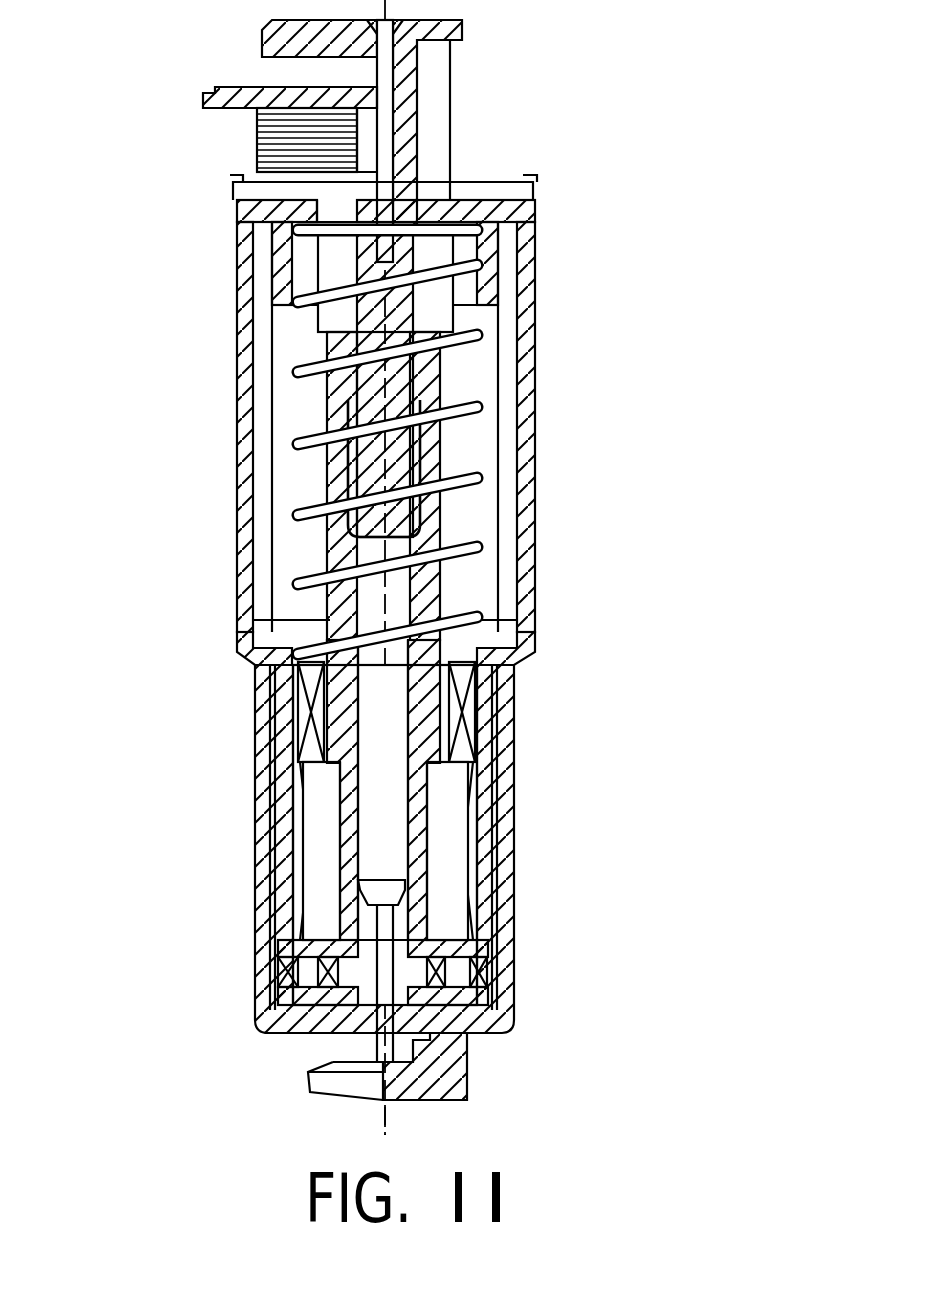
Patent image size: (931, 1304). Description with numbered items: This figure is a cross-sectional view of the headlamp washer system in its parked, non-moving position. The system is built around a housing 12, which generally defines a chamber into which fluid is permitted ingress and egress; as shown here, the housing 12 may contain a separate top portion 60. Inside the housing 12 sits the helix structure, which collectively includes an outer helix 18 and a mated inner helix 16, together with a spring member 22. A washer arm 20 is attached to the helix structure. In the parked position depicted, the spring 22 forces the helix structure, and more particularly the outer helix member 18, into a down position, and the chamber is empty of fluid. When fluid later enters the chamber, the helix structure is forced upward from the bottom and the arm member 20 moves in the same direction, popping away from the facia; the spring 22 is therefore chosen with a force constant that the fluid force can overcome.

The housing 12 is at (242, 342).
The inner helix 16 is at (447, 455).
The outer helix 18 is at (285, 885).
The washer arm 20 is at (453, 125).
The spring member 22 is at (462, 343).
The top portion 60 is at (522, 212).